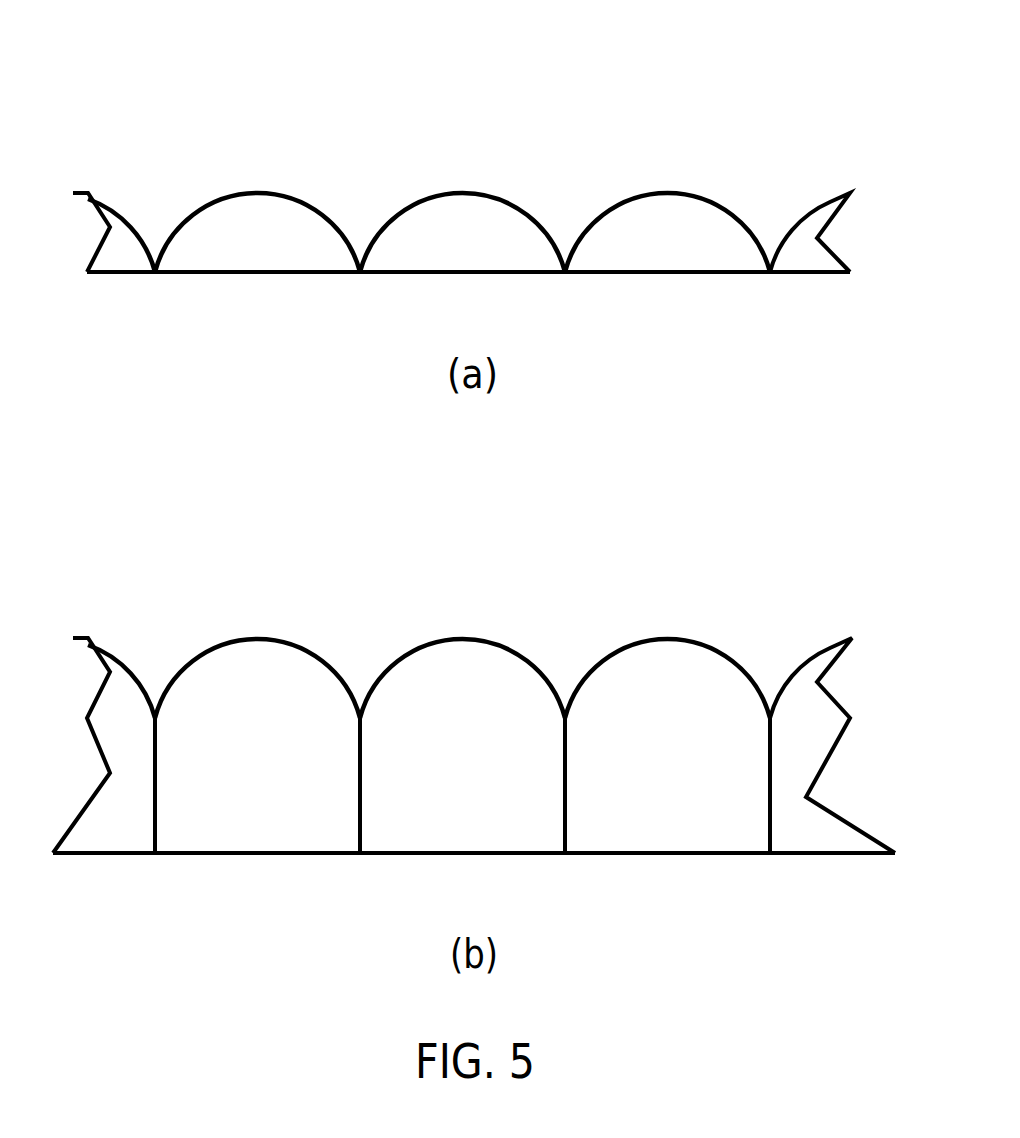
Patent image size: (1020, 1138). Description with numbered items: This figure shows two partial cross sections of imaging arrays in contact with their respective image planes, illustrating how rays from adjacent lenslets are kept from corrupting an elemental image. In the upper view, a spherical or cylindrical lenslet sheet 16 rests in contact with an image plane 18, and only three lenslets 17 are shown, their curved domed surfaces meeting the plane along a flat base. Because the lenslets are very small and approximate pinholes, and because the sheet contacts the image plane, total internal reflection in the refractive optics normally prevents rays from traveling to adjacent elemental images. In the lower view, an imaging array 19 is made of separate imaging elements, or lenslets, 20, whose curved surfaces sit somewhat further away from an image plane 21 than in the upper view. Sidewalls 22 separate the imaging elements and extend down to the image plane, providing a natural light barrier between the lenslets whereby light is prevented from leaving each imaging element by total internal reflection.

The lenslet sheet 16 is at (217, 130).
The lenslets 17 is at (665, 193).
The image plane 18 is at (611, 272).
The imaging array 19 is at (196, 564).
The imaging elements 20 is at (668, 638).
The image plane 21 is at (622, 853).
The sidewall 22 is at (155, 783).